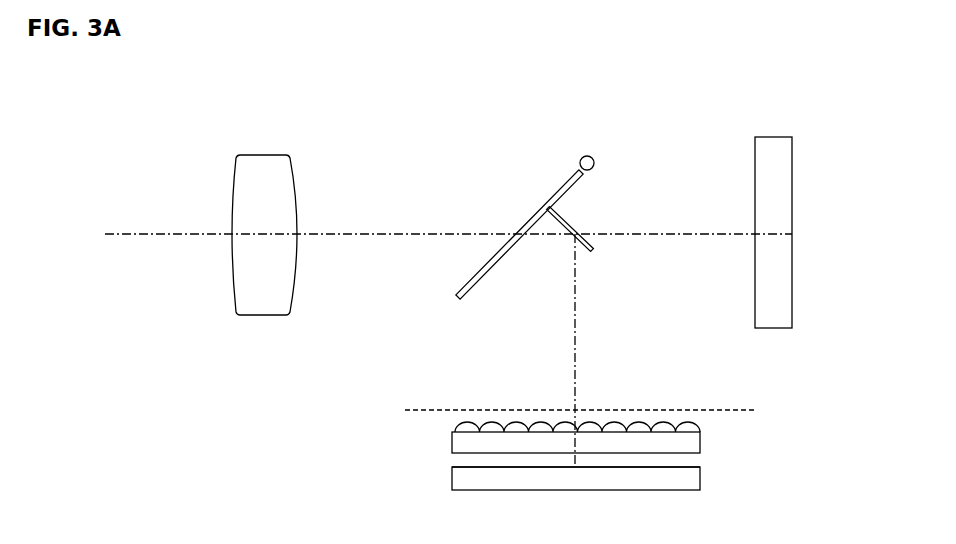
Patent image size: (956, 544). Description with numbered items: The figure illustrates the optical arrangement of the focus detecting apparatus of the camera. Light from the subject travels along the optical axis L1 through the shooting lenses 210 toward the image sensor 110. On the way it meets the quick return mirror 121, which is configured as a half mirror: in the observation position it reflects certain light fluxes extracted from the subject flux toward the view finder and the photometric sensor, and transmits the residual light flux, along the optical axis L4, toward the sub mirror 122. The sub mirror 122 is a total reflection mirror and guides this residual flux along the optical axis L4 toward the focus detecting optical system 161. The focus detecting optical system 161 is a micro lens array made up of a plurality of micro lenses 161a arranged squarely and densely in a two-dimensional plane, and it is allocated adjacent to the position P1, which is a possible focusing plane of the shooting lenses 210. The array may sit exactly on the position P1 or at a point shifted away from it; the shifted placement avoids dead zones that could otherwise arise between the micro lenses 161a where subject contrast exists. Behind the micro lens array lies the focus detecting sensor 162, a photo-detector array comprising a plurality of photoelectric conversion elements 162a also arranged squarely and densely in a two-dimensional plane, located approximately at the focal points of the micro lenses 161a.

The image sensor 110 is at (778, 193).
The quick return mirror 121 is at (530, 215).
The sub mirror 122 is at (580, 233).
The focus detecting optical system 161 is at (700, 442).
The micro lenses 161a is at (690, 428).
The focus detecting sensor 162 is at (700, 478).
The photoelectric conversion elements 162a is at (460, 466).
The shooting lenses 210 is at (282, 172).
The optical axis L1 is at (160, 234).
The optical axis L4 is at (575, 355).
The position P1 is at (418, 410).